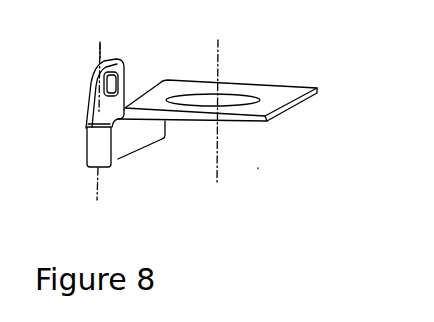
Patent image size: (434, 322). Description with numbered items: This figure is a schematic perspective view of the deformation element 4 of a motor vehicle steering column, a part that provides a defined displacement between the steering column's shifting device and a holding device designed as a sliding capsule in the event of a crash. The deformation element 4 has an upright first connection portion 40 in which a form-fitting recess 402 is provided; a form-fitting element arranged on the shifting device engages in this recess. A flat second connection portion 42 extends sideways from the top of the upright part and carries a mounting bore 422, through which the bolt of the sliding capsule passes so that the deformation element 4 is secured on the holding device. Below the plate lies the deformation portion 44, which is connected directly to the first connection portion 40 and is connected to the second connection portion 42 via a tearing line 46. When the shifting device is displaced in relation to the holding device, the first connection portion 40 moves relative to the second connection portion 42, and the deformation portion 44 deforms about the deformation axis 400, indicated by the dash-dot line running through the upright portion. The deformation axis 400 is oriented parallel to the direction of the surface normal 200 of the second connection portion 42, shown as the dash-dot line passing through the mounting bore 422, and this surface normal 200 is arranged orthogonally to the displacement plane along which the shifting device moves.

The deformation element 4 is at (258, 168).
The first connection portion 40 is at (85, 128).
The second connection portion 42 is at (280, 95).
The deformation portion 44 is at (118, 140).
The tearing line 46 is at (118, 127).
The surface normal 200 is at (217, 180).
The deformation axis 400 is at (100, 58).
The form-fitting recess 402 is at (125, 72).
The mounting bore 422 is at (233, 102).